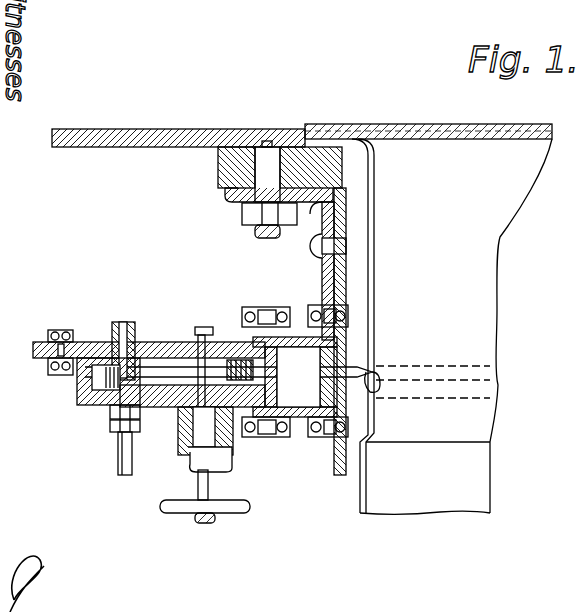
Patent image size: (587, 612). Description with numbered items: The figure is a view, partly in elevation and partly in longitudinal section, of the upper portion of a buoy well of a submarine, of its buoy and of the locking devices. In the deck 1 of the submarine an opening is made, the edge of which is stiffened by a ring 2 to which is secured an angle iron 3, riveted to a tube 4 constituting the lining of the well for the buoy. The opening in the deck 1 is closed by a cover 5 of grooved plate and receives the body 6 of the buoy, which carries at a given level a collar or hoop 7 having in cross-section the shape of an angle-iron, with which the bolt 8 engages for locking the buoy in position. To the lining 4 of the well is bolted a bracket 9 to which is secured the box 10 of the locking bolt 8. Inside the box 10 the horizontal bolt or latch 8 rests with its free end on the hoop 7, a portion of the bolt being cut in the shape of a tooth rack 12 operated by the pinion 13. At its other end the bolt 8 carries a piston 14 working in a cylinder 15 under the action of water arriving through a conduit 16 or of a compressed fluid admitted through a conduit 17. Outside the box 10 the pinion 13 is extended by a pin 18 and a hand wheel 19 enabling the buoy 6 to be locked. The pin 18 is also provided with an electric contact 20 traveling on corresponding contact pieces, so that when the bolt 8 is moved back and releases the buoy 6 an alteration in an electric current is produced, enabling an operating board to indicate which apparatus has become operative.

The deck 1 is at (157, 129).
The rings 2 is at (218, 168).
The angle irons 3 is at (322, 250).
The tubes 4 is at (334, 470).
The covers 5 is at (498, 124).
The body of the buoy 6 is at (378, 268).
The collar or hoop 7 is at (374, 366).
The bolts 8 is at (288, 338).
The brackets 9 is at (296, 437).
The boxes 10 is at (180, 342).
The tooth rack 12 is at (246, 337).
The pinion 13 is at (200, 327).
The piston 14 is at (76, 378).
The cylinder 15 is at (98, 405).
The conduit 16 is at (112, 330).
The conduit 17 is at (124, 476).
The pin 18 is at (208, 485).
The hand wheel 19 is at (224, 514).
The electric contact 20 is at (234, 458).